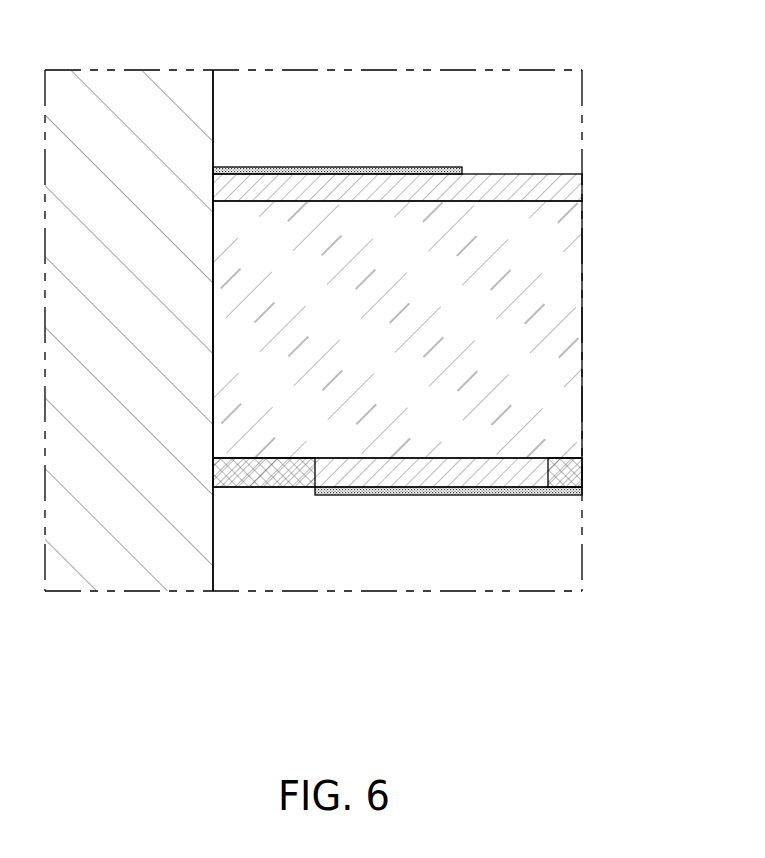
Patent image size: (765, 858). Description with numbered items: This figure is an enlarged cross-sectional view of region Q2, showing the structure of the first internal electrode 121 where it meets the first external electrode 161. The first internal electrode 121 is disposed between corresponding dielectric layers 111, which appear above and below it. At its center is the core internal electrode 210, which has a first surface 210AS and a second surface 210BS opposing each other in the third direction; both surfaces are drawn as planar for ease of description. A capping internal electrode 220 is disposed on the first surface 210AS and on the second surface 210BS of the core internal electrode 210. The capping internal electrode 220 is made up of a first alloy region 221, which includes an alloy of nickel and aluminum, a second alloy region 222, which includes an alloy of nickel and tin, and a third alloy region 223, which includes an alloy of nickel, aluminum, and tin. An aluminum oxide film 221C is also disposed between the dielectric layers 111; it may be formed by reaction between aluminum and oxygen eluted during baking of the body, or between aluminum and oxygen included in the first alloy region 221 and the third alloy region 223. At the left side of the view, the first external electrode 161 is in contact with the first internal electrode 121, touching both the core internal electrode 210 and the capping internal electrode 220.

The region Q2 is at (500, 70).
The dielectric layers 111 is at (567, 112).
The first internal electrode 121 is at (586, 348).
The first external electrode 161 is at (127, 578).
The core internal electrode 210 is at (567, 275).
The first surface 210AS is at (570, 201).
The second surface 210BS is at (570, 458).
The capping internal electrode 220 is at (397, 569).
The first alloy region 221 is at (424, 470).
The aluminum oxide film 221C is at (323, 165).
The second alloy region 222 is at (268, 470).
The third alloy region 223 is at (552, 549).